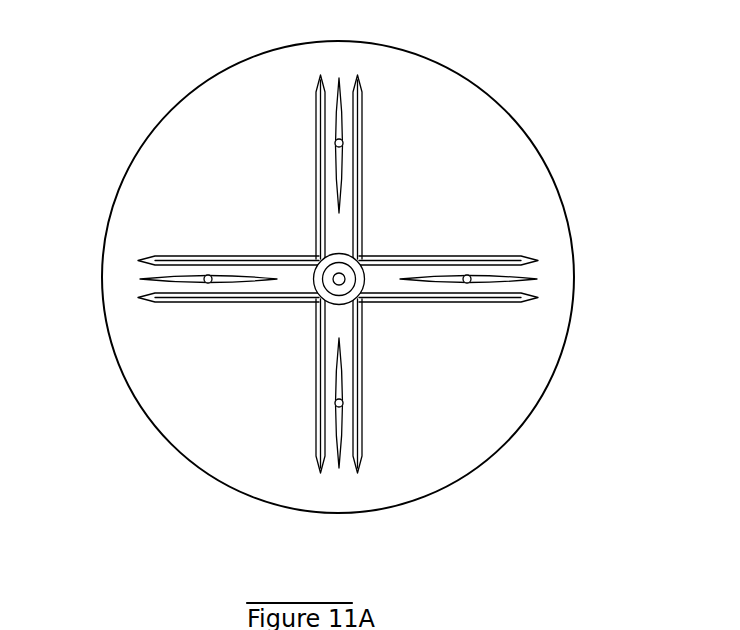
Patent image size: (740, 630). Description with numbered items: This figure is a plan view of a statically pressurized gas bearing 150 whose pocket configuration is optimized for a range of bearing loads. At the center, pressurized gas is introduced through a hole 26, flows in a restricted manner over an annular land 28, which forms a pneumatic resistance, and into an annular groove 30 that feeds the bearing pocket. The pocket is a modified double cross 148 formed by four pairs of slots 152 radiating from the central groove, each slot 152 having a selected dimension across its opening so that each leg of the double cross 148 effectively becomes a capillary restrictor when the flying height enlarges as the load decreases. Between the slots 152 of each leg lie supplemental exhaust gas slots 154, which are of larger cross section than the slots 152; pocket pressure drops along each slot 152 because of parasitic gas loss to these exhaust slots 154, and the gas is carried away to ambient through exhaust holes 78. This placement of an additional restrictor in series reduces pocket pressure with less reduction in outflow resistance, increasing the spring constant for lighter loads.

The gas bearing 150 is at (520, 120).
The modified double cross 148 is at (362, 103).
The slots 152 is at (497, 257).
The supplemental exhaust gas slots 154 is at (339, 79).
The exhaust holes 78 is at (343, 143).
The annular land 28 is at (325, 265).
The annular groove 30 is at (319, 291).
The hole 26 is at (345, 286).